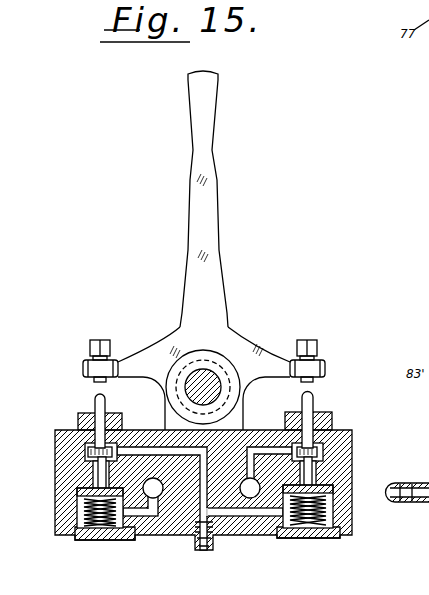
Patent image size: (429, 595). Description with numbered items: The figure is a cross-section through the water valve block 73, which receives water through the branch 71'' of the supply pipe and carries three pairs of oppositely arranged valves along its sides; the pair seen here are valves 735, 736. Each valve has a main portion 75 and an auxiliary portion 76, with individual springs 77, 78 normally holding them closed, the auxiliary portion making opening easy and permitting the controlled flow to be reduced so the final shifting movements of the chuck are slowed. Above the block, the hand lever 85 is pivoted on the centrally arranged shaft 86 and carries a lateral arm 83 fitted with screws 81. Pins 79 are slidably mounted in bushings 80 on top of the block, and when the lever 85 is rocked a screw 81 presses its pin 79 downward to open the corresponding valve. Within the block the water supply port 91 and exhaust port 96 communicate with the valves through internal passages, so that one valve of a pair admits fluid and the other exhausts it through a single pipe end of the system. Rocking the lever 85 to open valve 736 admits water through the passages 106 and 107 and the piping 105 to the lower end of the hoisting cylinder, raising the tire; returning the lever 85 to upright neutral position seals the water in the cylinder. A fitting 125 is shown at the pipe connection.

The valve block 73 is at (58, 453).
The main portion 75 is at (82, 503).
The auxiliary portion 76 is at (98, 476).
The spring 77 is at (100, 516).
The spring 78 is at (100, 525).
The pin 79 is at (95, 402).
The bushing 80 is at (116, 413).
The screw 81 is at (110, 343).
The lateral arm 83 is at (266, 349).
The hand lever 85 is at (214, 204).
The shaft 86 is at (210, 389).
The supply port 91 is at (163, 498).
The exhaust port 96 is at (251, 493).
The piping 105 is at (200, 553).
The passage 106 is at (140, 517).
The passage 107 is at (150, 447).
The coupling 125 is at (397, 503).
The branch 71'' is at (408, 508).
The valve 735 is at (323, 454).
The valve 736 is at (90, 463).